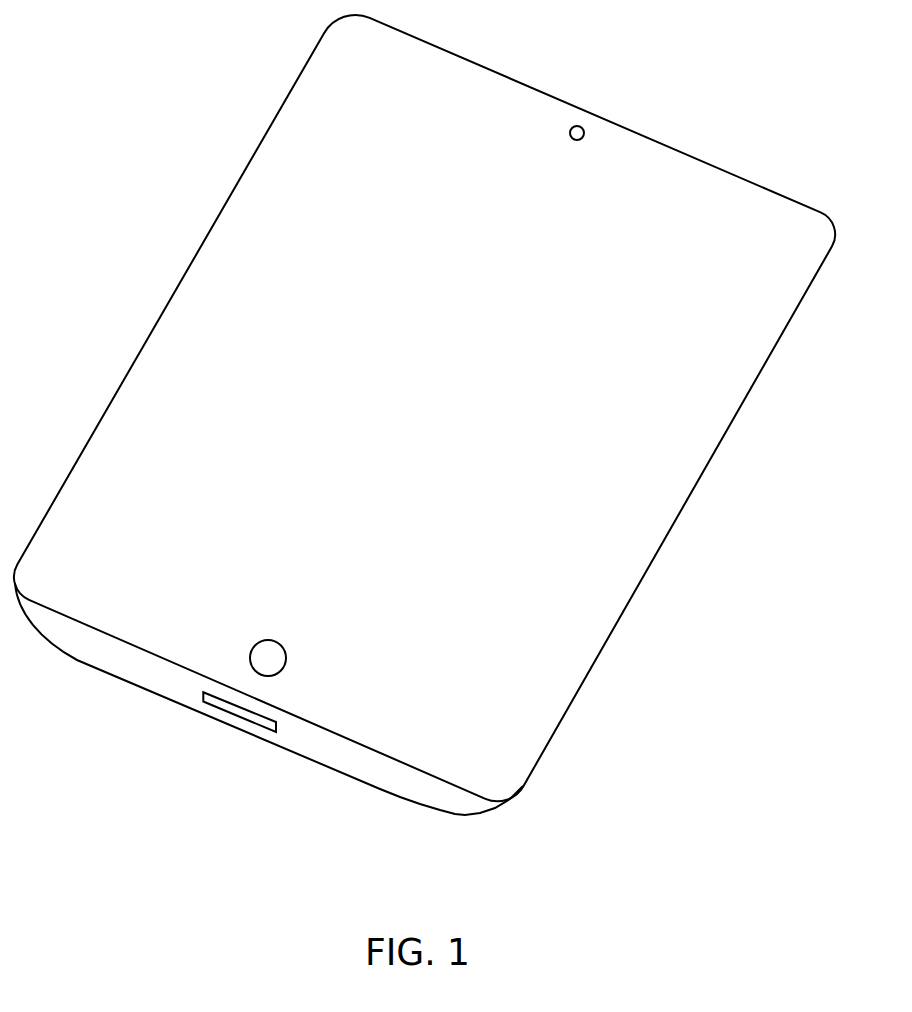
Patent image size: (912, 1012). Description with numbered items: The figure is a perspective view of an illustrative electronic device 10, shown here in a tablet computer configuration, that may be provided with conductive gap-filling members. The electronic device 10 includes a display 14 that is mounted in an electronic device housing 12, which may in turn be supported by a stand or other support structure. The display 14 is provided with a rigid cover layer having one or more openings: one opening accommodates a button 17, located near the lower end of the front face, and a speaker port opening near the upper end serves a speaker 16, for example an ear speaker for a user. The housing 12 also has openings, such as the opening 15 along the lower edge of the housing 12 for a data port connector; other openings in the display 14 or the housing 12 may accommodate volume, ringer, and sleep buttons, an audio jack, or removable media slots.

The electronic device 10 is at (223, 83).
The electronic device housing 12 is at (405, 783).
The display 14 is at (650, 487).
The opening 15 is at (245, 718).
The speaker 16 is at (579, 126).
The button 17 is at (287, 659).